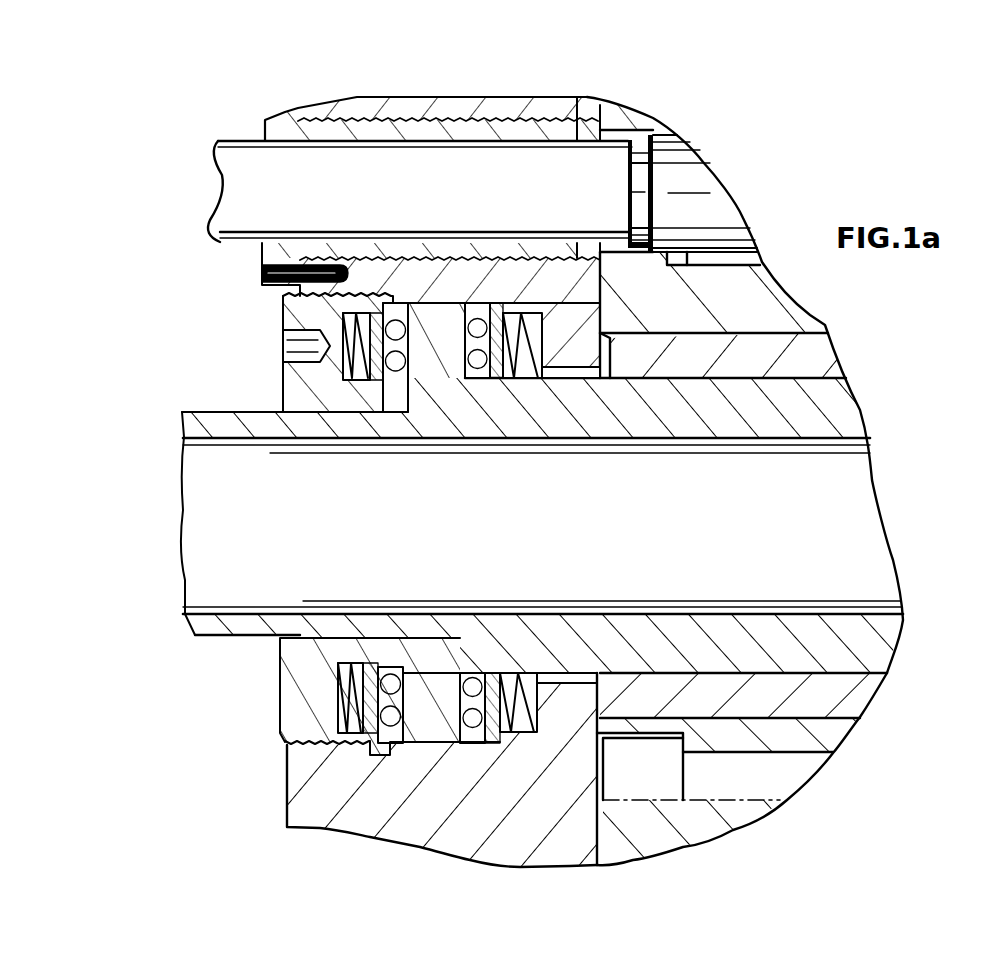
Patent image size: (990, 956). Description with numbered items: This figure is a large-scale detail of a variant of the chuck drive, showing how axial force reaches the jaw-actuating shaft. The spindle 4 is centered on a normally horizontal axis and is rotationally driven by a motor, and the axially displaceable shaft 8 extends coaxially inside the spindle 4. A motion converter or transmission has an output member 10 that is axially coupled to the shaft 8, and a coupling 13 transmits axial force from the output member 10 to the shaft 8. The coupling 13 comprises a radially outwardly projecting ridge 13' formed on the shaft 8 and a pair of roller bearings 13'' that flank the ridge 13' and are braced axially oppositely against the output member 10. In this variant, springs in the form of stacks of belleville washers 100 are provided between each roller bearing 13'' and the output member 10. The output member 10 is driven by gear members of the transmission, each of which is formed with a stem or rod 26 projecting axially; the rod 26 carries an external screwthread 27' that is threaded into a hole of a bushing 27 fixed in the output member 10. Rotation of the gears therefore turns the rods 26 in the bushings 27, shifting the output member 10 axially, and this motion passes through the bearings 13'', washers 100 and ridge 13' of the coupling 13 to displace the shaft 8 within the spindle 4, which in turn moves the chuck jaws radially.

The spindle 4 is at (743, 320).
The shaft 8 is at (865, 648).
The output member 10 is at (340, 788).
The coupling 13 is at (330, 458).
The ridge 13' is at (498, 400).
The roller bearings 13'' is at (427, 523).
The rod 26 is at (228, 178).
The bushing 27 is at (432, 93).
The external screwthread 27' is at (372, 284).
The belleville washers 100 is at (343, 315).